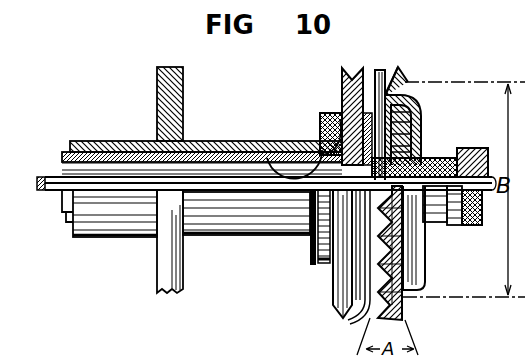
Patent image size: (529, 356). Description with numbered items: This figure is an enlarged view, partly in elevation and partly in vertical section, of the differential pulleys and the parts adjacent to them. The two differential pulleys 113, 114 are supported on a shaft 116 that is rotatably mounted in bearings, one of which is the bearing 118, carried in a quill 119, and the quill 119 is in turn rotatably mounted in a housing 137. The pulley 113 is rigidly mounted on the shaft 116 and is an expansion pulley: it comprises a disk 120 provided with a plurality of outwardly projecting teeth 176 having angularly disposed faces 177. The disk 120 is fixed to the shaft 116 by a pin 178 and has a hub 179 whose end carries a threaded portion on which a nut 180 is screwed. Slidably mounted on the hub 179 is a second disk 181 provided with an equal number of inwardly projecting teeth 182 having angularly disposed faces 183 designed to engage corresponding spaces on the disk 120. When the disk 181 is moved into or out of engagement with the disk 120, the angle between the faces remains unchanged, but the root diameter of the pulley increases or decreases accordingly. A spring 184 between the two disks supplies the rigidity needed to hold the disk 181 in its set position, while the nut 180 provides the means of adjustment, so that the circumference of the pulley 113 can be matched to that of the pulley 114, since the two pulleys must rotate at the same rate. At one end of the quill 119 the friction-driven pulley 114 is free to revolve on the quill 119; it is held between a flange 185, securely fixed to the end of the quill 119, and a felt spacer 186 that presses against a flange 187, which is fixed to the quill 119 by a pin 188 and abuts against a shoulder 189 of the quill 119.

The differential pulley 113 is at (433, 289).
The differential pulley 114 is at (337, 298).
The shaft 116 is at (48, 175).
The bearing 118 is at (320, 140).
The quill 119 is at (210, 153).
The disk 120 is at (368, 320).
The housing 137 is at (228, 238).
The outwardly projecting teeth 176 is at (376, 77).
The angularly disposed faces 177 is at (380, 72).
The pin 178 is at (425, 157).
The hub 179 is at (455, 163).
The nut 180 is at (458, 227).
The disk 181 is at (416, 100).
The inwardly projecting teeth 182 is at (405, 76).
The angularly disposed faces 183 is at (395, 72).
The spring 184 is at (411, 125).
The flange 185 is at (362, 308).
The felt spacer 186 is at (338, 125).
The flange 187 is at (330, 122).
The pin 188 is at (318, 176).
The shoulder 189 is at (270, 155).